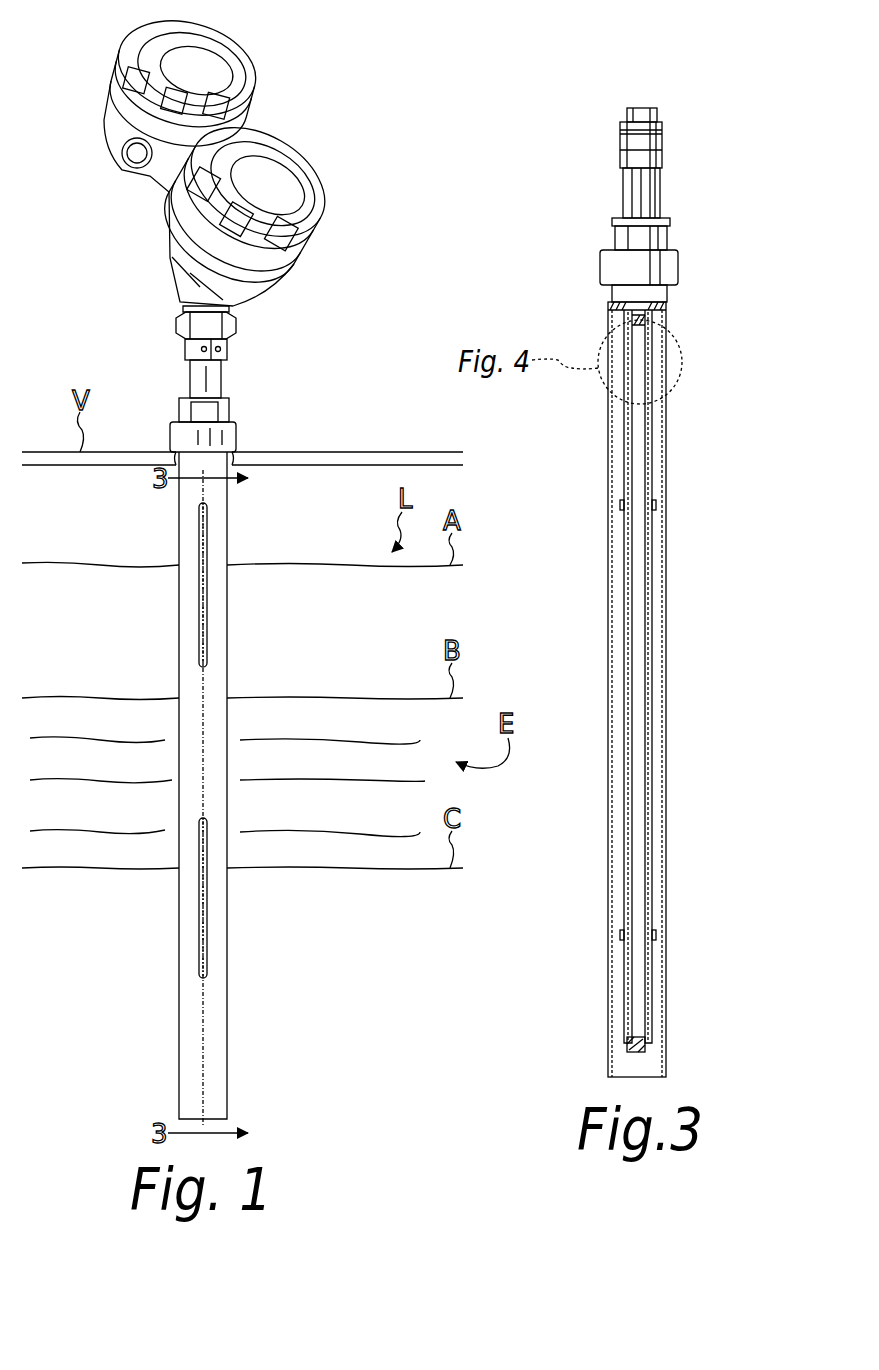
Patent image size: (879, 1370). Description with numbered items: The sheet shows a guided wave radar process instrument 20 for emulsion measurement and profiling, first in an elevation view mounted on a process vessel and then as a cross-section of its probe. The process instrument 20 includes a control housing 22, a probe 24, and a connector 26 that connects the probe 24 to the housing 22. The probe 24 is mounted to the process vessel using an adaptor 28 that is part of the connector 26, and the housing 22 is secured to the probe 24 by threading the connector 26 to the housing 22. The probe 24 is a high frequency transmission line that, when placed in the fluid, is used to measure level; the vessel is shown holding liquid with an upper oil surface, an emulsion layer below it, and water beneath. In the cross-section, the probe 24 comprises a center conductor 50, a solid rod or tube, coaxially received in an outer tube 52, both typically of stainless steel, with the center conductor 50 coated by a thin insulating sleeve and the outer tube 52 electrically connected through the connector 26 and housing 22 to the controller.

In FIG. 1, the process instrument 20 is at (343, 156).
In FIG. 1, the control housing 22 is at (277, 284).
In FIG. 1, the probe 24 is at (238, 517).
In FIG. 3, the probe 24 is at (702, 424).
In FIG. 1, the connector 26 is at (238, 374).
In FIG. 1, the adaptor 28 is at (238, 435).
In FIG. 3, the adaptor 28 is at (678, 260).
In FIG. 3, the center conductor 50 is at (637, 492).
In FIG. 1, the outer tube 52 is at (214, 1031).
In FIG. 3, the outer tube 52 is at (667, 577).